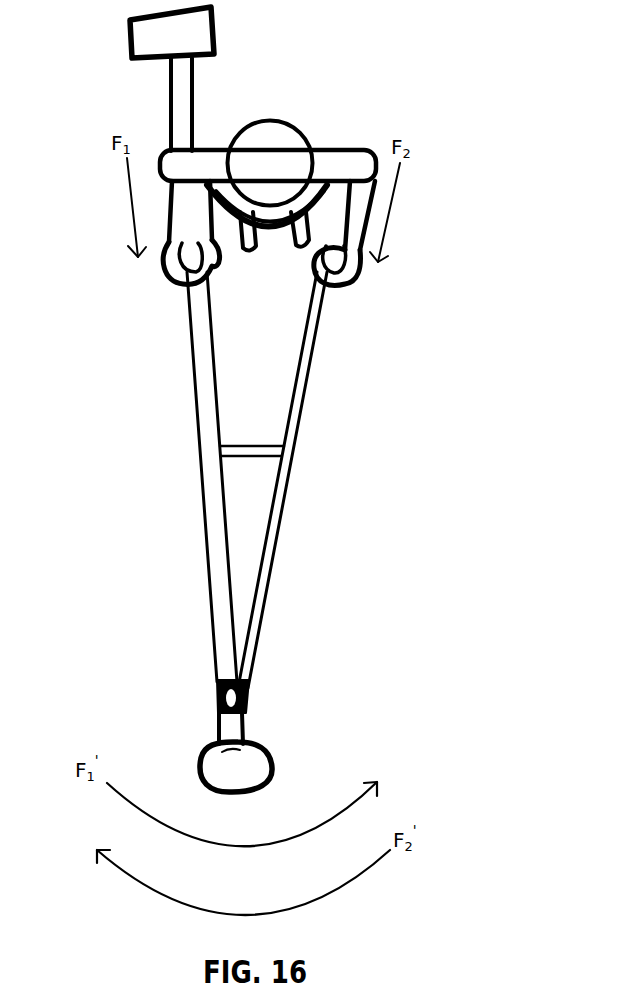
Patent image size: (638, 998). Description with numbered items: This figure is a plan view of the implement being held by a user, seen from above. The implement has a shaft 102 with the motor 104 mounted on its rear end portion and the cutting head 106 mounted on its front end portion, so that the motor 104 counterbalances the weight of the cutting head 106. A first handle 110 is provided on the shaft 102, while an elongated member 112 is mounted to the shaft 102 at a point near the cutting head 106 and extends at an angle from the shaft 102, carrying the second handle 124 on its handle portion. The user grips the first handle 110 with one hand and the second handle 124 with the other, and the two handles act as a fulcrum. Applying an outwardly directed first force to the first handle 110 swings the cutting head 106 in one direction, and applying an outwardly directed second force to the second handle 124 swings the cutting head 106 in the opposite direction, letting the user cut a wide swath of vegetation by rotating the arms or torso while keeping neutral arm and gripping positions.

The shaft 102 is at (203, 463).
The motor 104 is at (215, 22).
The cutting head 106 is at (273, 753).
The first handle 110 is at (170, 273).
The elongated member 112 is at (307, 390).
The second handle 124 is at (353, 273).